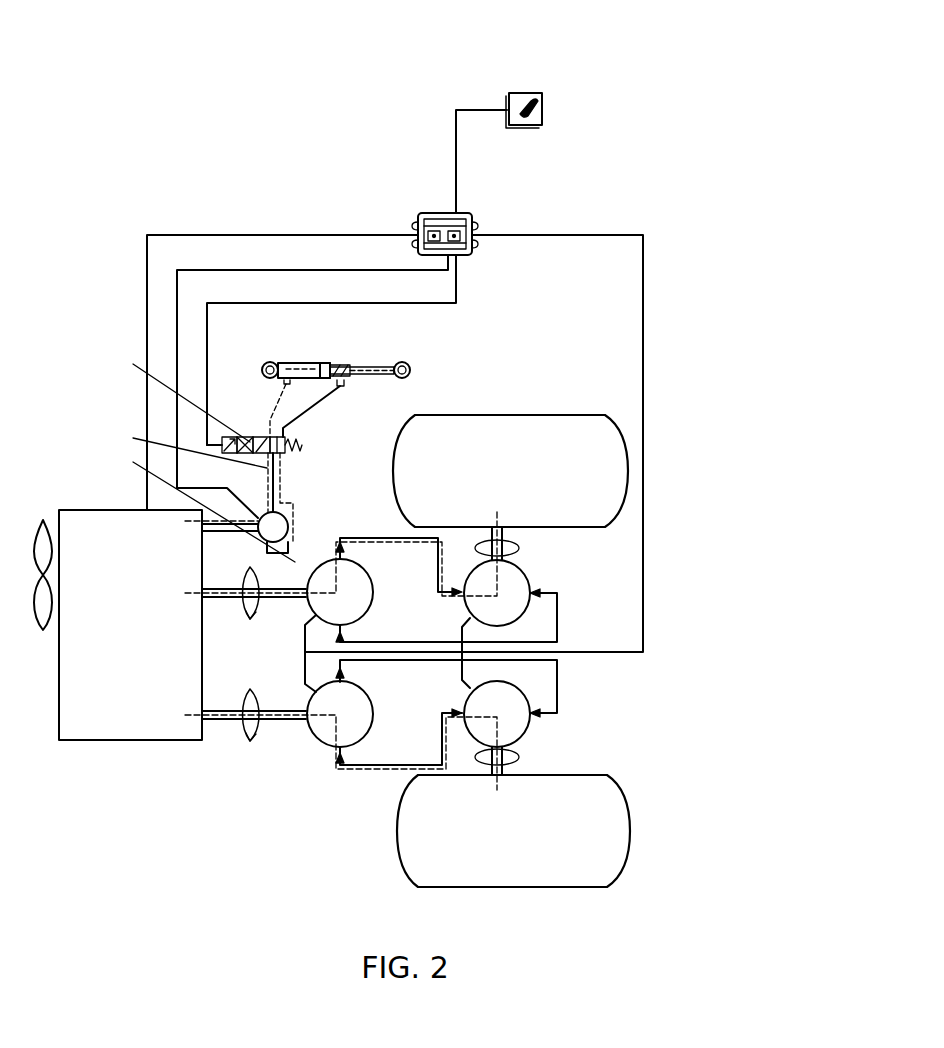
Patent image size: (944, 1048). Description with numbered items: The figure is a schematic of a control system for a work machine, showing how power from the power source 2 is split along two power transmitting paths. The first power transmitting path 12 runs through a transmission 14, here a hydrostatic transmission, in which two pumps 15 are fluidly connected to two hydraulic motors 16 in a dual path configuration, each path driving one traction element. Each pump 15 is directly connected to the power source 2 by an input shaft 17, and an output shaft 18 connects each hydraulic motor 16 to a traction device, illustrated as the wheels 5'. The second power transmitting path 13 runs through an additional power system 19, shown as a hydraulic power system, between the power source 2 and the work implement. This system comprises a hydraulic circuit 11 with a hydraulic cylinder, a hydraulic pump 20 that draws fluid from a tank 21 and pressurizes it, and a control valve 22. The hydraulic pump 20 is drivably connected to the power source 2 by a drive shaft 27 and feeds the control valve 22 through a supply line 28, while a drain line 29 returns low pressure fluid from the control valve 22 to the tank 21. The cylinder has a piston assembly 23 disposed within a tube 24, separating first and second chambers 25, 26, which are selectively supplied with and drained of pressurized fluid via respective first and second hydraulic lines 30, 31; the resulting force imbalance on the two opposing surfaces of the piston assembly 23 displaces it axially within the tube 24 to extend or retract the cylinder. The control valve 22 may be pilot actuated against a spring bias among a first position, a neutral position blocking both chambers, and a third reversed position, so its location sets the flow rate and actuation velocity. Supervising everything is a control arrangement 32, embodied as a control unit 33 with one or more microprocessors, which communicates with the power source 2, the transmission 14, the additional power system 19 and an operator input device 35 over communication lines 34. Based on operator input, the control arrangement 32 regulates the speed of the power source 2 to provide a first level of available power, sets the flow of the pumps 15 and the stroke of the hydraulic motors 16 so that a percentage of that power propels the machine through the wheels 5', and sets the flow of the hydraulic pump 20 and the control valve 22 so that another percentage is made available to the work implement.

The power source 2 is at (92, 738).
The wheels 5' is at (547, 682).
The hydraulic circuit 11 is at (252, 415).
The first power transmitting path 12 is at (268, 708).
The second power transmitting path 13 is at (197, 504).
The transmission 14 is at (298, 741).
The pumps 15 is at (356, 599).
The hydraulic motors 16 is at (531, 586).
The input shaft 17 is at (216, 708).
The output shaft 18 is at (505, 535).
The additional power system 19 is at (312, 494).
The hydraulic pump 20 is at (288, 522).
The tank 21 is at (295, 562).
The control valve 22 is at (175, 390).
The piston assembly 23 is at (348, 366).
The tube 24 is at (313, 366).
The second chamber 25 is at (303, 366).
The annular chamber 26 is at (336, 366).
The drive shaft 27 is at (237, 533).
The supply line 28 is at (183, 446).
The drain line 29 is at (282, 468).
The first hydraulic line 30 is at (282, 405).
The second hydraulic line 31 is at (313, 411).
The control arrangement 32 is at (394, 206).
The control unit 33 is at (462, 213).
The communication lines 34 is at (452, 150).
The operator input device 35 is at (527, 88).